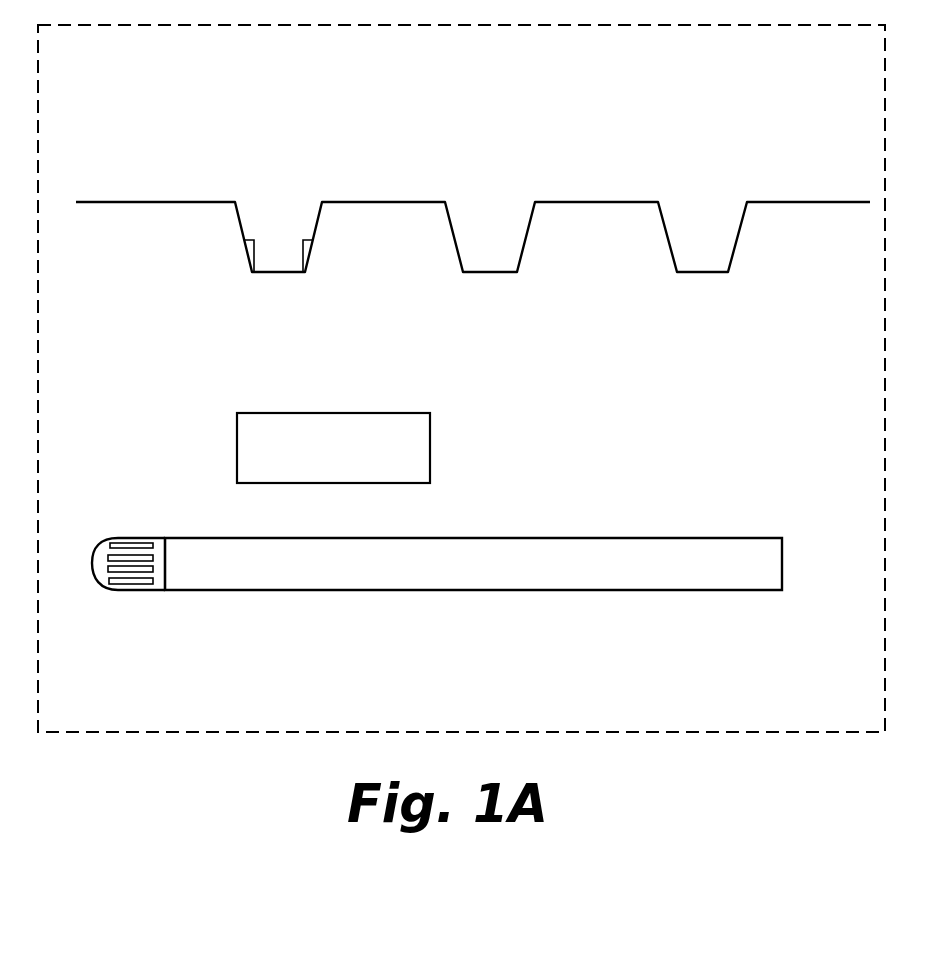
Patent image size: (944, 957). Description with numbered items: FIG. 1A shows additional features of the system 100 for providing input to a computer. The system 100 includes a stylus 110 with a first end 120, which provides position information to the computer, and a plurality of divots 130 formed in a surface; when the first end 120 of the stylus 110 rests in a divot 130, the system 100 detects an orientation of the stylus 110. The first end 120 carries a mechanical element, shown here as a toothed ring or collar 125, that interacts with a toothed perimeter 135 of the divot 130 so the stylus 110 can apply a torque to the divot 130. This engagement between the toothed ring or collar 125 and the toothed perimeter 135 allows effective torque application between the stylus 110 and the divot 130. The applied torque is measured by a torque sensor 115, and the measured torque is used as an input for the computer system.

The system 100 is at (432, 72).
The stylus 110 is at (452, 576).
The torque sensor 115 is at (352, 473).
The first end 120 is at (119, 608).
The toothed ring or collar 125 is at (127, 557).
The divot 130 is at (278, 258).
The toothed perimeter 135 is at (248, 256).